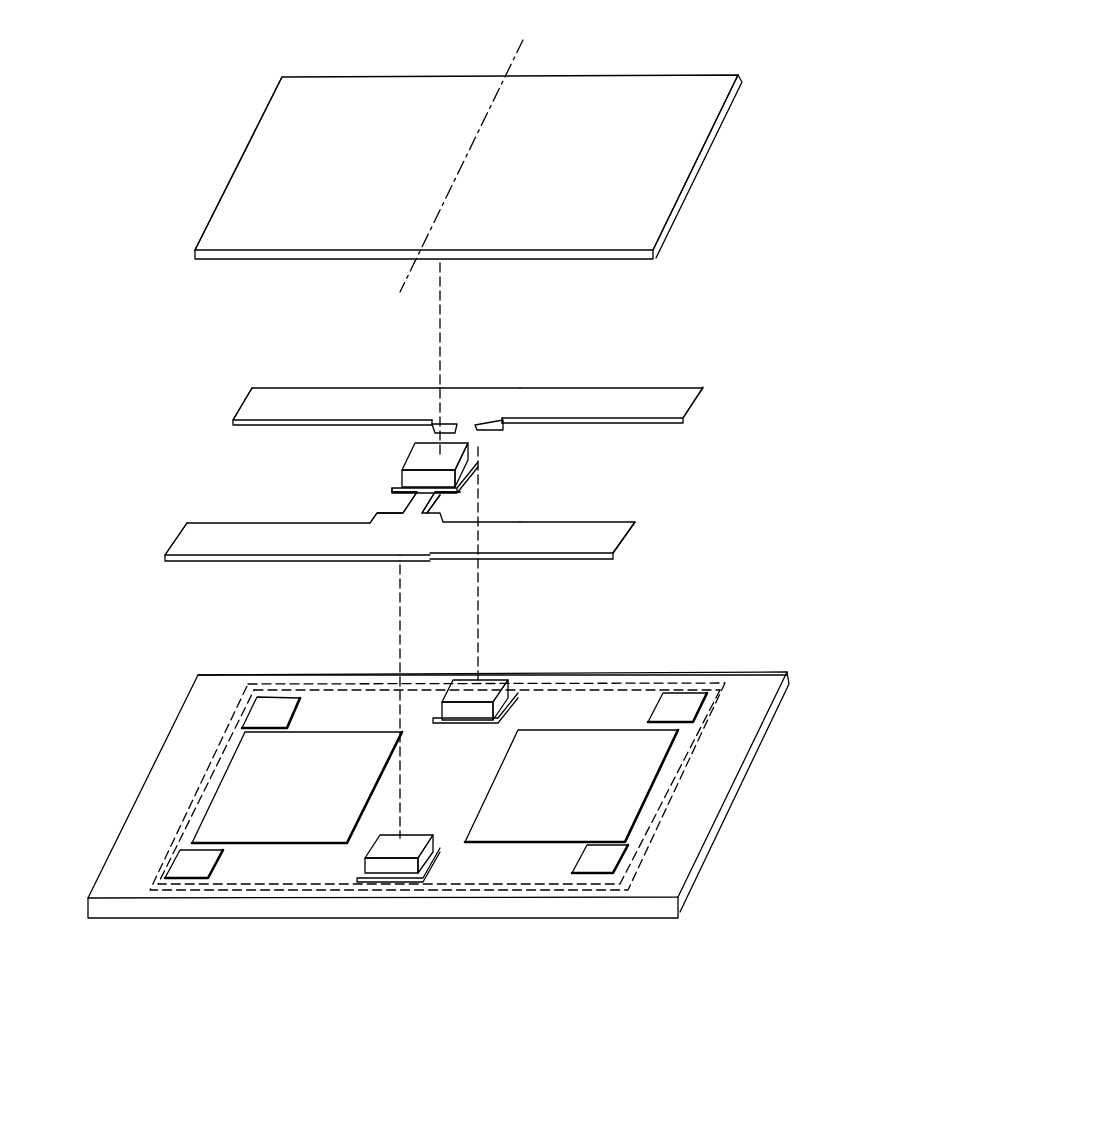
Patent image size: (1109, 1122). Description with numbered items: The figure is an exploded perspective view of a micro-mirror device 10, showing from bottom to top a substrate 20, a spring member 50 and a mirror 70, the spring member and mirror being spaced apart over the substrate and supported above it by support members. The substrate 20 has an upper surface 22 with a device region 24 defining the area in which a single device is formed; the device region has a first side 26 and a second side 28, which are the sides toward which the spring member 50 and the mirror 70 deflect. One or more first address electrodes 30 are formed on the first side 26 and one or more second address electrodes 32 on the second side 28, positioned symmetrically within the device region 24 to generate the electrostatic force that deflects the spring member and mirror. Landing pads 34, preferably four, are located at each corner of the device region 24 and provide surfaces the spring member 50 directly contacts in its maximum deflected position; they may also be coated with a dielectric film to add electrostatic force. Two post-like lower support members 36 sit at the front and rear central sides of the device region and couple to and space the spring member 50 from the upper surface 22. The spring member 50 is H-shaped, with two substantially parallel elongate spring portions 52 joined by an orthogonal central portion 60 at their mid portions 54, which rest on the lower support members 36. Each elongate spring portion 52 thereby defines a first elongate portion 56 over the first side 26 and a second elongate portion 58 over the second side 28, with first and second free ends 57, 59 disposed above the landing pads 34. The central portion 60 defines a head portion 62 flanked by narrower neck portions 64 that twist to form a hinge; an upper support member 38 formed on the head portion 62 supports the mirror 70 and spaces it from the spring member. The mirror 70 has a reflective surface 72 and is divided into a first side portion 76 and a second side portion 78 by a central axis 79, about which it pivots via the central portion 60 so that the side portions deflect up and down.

The micro-mirror device 10 is at (124, 138).
The substrate 20 is at (702, 858).
The upper surface 22 is at (690, 807).
The device region 24 is at (702, 675).
The first side 26 is at (628, 672).
The second side 28 is at (318, 680).
The first address electrode 30 is at (628, 762).
The second address electrode 32 is at (258, 780).
The landing pad 34 is at (272, 712).
The lower support member 36 is at (512, 680).
The upper support member 38 is at (478, 460).
The spring member 50 is at (729, 390).
The elongate spring portion 52 is at (263, 357).
The mid portion 54 is at (443, 382).
The first elongate portion 56 is at (517, 382).
The first free end 57 is at (673, 406).
The second elongate portion 58 is at (255, 382).
The second free end 59 is at (260, 411).
The central portion 60 is at (413, 428).
The head portion 62 is at (470, 485).
The neck portion 64 is at (458, 437).
The mirror 70 is at (776, 108).
The reflective surface 72 is at (687, 90).
The first side portion 76 is at (582, 162).
The second side portion 78 is at (343, 152).
The central axis 79 is at (518, 57).